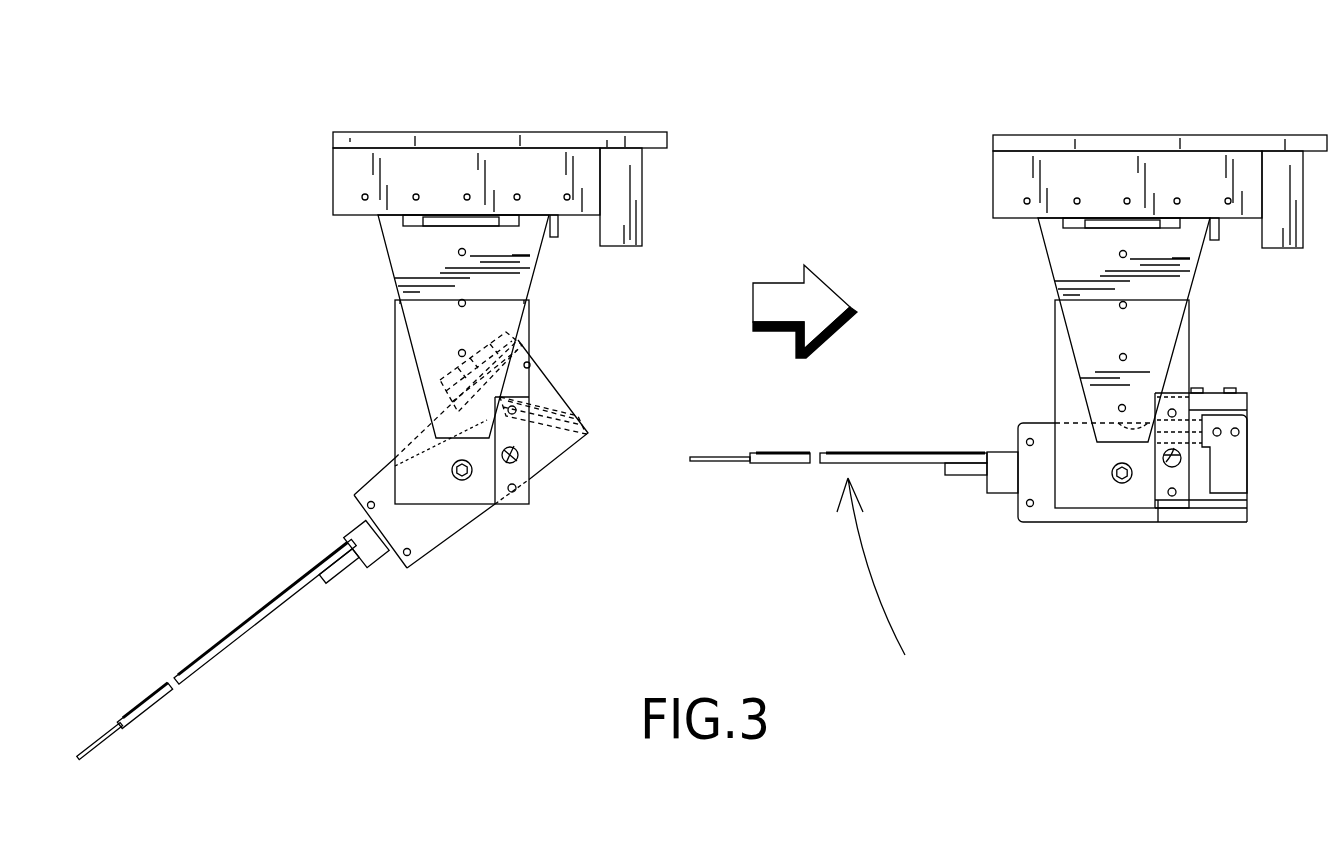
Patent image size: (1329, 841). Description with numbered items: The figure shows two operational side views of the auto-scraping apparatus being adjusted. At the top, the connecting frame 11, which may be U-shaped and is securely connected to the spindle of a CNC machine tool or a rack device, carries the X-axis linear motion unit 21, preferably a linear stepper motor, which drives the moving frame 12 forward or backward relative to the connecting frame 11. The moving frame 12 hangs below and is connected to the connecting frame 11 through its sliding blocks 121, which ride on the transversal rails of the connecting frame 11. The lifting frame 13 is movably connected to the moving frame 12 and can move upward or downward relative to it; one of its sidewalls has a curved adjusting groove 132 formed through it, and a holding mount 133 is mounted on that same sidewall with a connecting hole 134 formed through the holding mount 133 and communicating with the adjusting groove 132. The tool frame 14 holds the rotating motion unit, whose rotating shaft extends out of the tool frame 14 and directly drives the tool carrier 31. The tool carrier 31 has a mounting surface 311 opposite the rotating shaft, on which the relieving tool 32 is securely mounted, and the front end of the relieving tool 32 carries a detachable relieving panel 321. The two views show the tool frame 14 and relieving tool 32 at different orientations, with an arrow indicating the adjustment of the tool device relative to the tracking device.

The connecting frame 11 is at (406, 137).
The moving frame 12 is at (509, 250).
The sliding blocks 121 is at (437, 221).
The lifting frame 13 is at (405, 417).
The adjusting groove 132 is at (482, 425).
The holding mount 133 is at (515, 503).
The connecting hole 134 is at (516, 463).
The tool frame 14 is at (420, 540).
The X-axis linear motion unit 21 is at (628, 190).
The tool carrier 31 is at (352, 535).
The mounting surface 311 is at (345, 580).
The relieving tool 32 is at (227, 628).
The relieving panel 321 is at (97, 747).